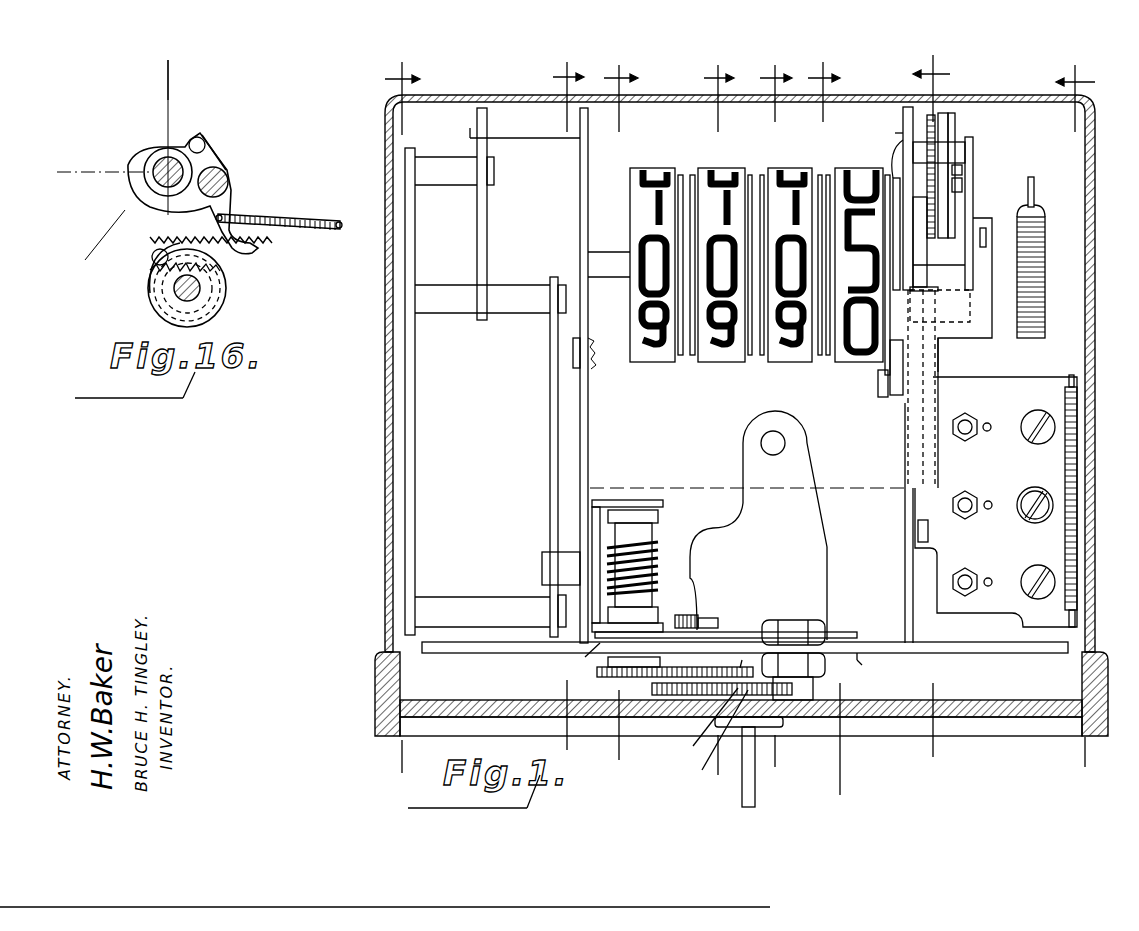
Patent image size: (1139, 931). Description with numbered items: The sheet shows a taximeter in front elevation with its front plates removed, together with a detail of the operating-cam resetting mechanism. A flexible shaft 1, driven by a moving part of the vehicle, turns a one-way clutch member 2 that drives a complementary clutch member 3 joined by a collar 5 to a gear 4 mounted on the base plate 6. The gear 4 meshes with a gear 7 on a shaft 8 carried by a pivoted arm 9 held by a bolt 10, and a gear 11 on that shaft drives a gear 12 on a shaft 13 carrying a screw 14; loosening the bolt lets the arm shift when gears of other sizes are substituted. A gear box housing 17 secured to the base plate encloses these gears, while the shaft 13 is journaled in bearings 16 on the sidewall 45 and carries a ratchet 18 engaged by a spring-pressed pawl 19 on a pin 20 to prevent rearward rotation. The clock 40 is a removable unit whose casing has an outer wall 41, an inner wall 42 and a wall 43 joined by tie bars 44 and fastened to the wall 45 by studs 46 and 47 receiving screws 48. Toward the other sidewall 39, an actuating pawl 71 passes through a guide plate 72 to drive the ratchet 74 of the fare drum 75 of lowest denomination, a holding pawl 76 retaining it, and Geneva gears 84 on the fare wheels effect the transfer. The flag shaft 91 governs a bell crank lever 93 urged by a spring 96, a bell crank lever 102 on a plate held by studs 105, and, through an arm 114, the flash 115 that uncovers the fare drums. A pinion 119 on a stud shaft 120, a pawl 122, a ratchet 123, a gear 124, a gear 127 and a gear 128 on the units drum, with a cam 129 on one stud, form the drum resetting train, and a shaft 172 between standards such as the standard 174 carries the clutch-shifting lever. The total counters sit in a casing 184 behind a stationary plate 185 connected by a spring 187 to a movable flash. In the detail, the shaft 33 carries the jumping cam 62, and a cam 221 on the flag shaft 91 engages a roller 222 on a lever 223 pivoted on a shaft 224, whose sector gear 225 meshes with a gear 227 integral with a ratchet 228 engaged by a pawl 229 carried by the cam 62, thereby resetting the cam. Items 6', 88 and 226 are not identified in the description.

In FIG. 1, the flexible shaft 1 is at (742, 800).
In FIG. 1, the one-way clutch member 2 is at (783, 728).
In FIG. 1, the complementary clutch member 3 is at (800, 696).
In FIG. 1, the gear 4 is at (817, 413).
In FIG. 1, the collar 5 is at (561, 414).
In FIG. 1, the base plate 6 is at (572, 398).
In FIG. 1, the plate 6' is at (888, 664).
In FIG. 1, the gear 7 is at (643, 689).
In FIG. 1, the shaft 8 is at (776, 417).
In FIG. 1, the pivoted arm 9 is at (734, 424).
In FIG. 1, the bolt 10 is at (623, 410).
In FIG. 1, the gear 11 is at (743, 660).
In FIG. 1, the gear 12 is at (597, 672).
In FIG. 1, the shaft 13 is at (655, 612).
In FIG. 1, the screw 14 is at (650, 566).
In FIG. 1, the bearings 16 is at (655, 507).
In FIG. 1, the gear box housing 17 is at (523, 700).
In FIG. 1, the ratchet 18 is at (580, 660).
In FIG. 1, the spring-pressed pawl 19 is at (728, 628).
In FIG. 1, the pin 20 is at (742, 660).
In FIG. 1, the sidewall 39 is at (905, 457).
In FIG. 1, the clock 40 is at (454, 303).
In FIG. 1, the outer wall 41 is at (415, 519).
In FIG. 1, the inner wall 42 is at (550, 494).
In FIG. 1, the wall 43 is at (487, 247).
In FIG. 1, the tie bars 44 is at (521, 309).
In FIG. 1, the sidewall 45 is at (588, 464).
In FIG. 1, the stud 46 is at (542, 572).
In FIG. 1, the stud 47 is at (558, 136).
In FIG. 1, the screws 48 is at (472, 132).
In FIG. 1, the actuating pawl 71 is at (893, 178).
In FIG. 1, the guide plate 72 is at (905, 275).
In FIG. 1, the ratchet 74 is at (940, 389).
In FIG. 1, the fare drum 75 is at (884, 352).
In FIG. 1, the holding pawl 76 is at (882, 397).
In FIG. 1, the Geneva gears 84 is at (830, 355).
In FIG. 1, the bell crank lever 93 is at (1036, 190).
In FIG. 1, the spring 96 is at (1045, 305).
In FIG. 1, the bell crank lever 102 is at (1005, 234).
In FIG. 1, the studs 105 is at (955, 152).
In FIG. 1, the arm 114 is at (993, 255).
In FIG. 1, the flash 115 is at (938, 358).
In FIG. 1, the pinion 119 is at (962, 170).
In FIG. 1, the stud shaft 120 is at (962, 188).
In FIG. 1, the spring-pressed pawl 122 is at (932, 240).
In FIG. 1, the ratchet 123 is at (938, 205).
In FIG. 1, the gear 124 is at (927, 121).
In FIG. 1, the gear 127 is at (903, 148).
In FIG. 1, the gear 128 is at (941, 293).
In FIG. 1, the cam 129 is at (958, 175).
In FIG. 1, the shaft 172 is at (773, 455).
In FIG. 1, the standard 174 is at (758, 525).
In FIG. 1, the casing 184 is at (996, 502).
In FIG. 1, the stationary plate 185 is at (1078, 622).
In FIG. 1, the spring 187 is at (1065, 462).
In FIG. 16, the shaft 33 is at (178, 298).
In FIG. 16, the jumping cam 62 is at (150, 283).
In FIG. 16, the centerline 88 is at (168, 102).
In FIG. 16, the flag shaft 91 is at (152, 165).
In FIG. 16, the cam 221 is at (133, 192).
In FIG. 16, the roller 222 is at (213, 128).
In FIG. 16, the lever 223 is at (220, 153).
In FIG. 16, the shaft 224 is at (229, 184).
In FIG. 16, the sector gear 225 is at (253, 249).
In FIG. 16, the spring 226 is at (286, 217).
In FIG. 16, the gear 227 is at (228, 276).
In FIG. 16, the ratchet 228 is at (203, 303).
In FIG. 16, the pawl 229 is at (150, 290).